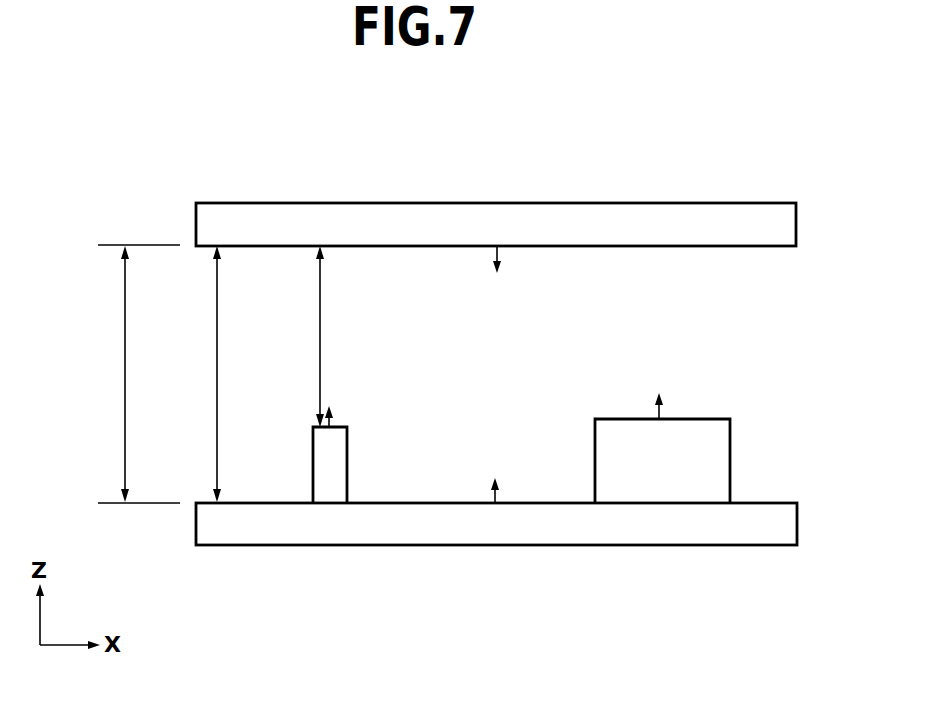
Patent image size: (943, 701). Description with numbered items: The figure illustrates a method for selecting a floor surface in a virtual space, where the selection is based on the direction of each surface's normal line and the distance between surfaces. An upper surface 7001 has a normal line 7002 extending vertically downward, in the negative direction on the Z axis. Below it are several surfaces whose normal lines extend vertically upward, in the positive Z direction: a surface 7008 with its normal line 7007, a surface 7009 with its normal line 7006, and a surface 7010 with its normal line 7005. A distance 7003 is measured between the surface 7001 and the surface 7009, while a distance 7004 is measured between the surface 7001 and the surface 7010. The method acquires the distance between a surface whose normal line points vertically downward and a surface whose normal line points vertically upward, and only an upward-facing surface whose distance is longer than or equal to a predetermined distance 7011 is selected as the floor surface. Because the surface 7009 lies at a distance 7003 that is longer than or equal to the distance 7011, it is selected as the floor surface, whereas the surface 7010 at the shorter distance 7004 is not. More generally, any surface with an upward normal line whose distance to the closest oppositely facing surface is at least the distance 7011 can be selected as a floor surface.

The surface 7001 is at (733, 213).
The normal line 7002 is at (499, 252).
The distance 7003 is at (184, 374).
The distance 7004 is at (286, 336).
The normal line 7005 is at (333, 423).
The normal line 7006 is at (497, 499).
The normal line 7007 is at (662, 414).
The surface 7008 is at (712, 458).
The surface 7009 is at (750, 536).
The surface 7010 is at (334, 468).
The distance 7011 is at (116, 374).